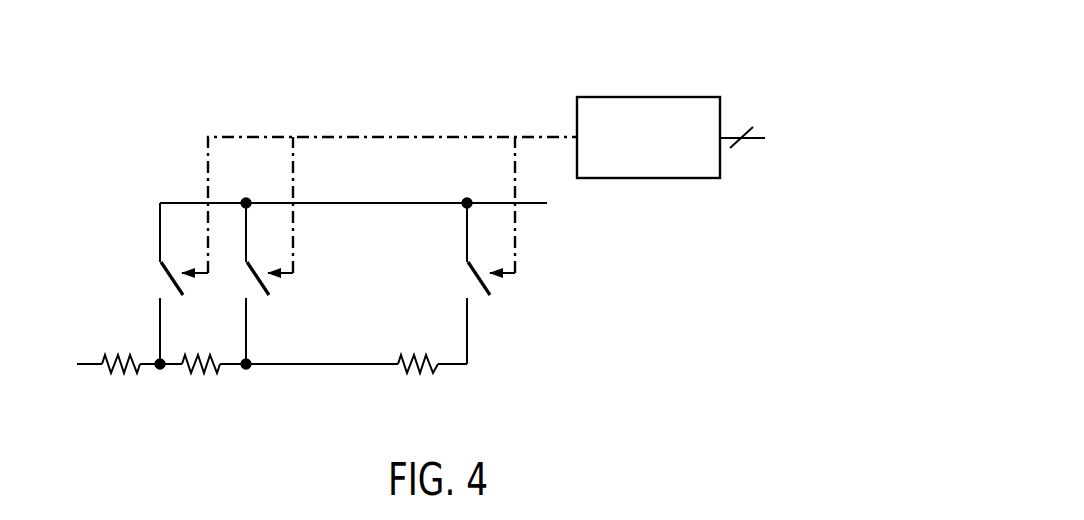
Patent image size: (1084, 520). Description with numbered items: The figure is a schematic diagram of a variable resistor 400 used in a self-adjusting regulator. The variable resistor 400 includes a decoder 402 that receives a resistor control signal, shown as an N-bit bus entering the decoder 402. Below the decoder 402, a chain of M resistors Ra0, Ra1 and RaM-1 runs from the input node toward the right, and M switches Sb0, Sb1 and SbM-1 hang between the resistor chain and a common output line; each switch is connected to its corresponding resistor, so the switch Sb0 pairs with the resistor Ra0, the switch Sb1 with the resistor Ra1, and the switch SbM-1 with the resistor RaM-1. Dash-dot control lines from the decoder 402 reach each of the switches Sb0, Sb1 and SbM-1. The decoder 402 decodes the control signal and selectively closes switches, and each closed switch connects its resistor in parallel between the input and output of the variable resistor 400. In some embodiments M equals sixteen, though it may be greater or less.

The variable resistor 400 is at (459, 84).
The decoder 402 is at (652, 97).
The switch Sb0 is at (157, 281).
The switch Sb1 is at (244, 284).
The switch SbM-1 is at (466, 280).
The resistor Ra0 is at (94, 373).
The resistor Ra1 is at (176, 373).
The resistor RaM-1 is at (389, 372).